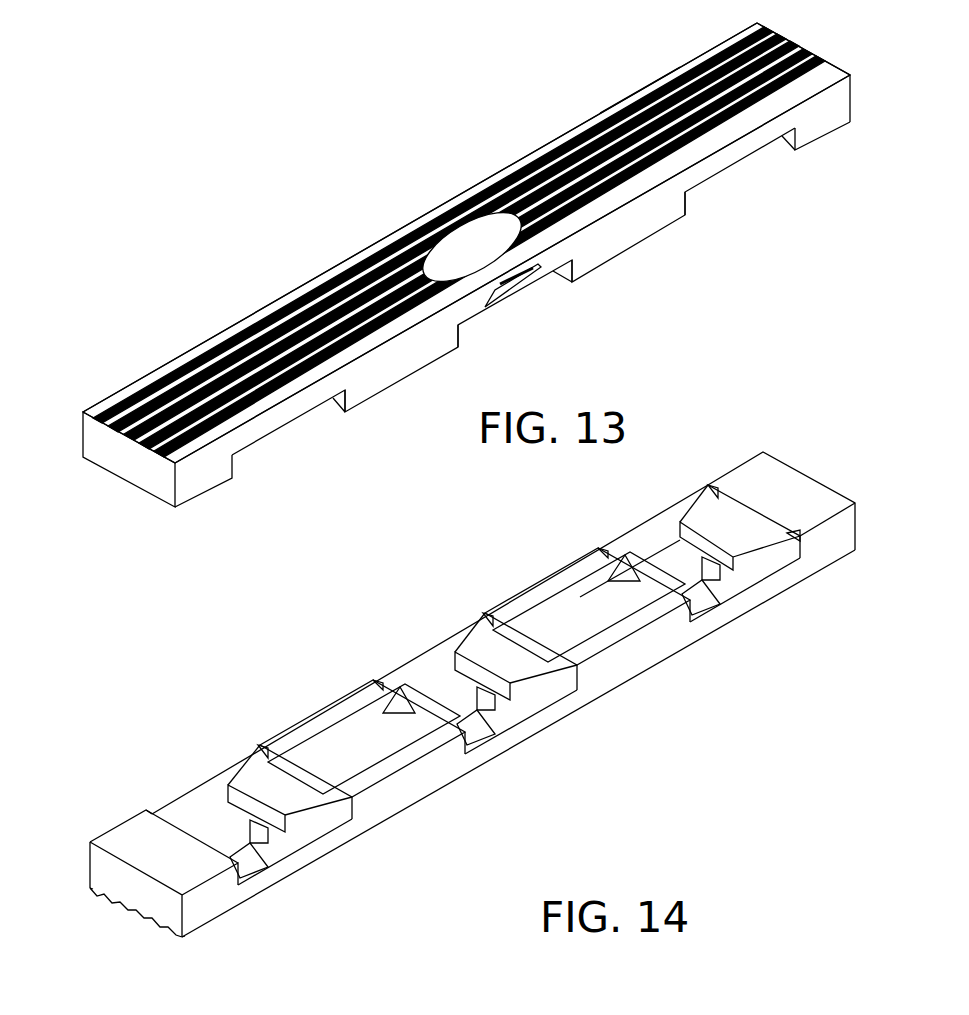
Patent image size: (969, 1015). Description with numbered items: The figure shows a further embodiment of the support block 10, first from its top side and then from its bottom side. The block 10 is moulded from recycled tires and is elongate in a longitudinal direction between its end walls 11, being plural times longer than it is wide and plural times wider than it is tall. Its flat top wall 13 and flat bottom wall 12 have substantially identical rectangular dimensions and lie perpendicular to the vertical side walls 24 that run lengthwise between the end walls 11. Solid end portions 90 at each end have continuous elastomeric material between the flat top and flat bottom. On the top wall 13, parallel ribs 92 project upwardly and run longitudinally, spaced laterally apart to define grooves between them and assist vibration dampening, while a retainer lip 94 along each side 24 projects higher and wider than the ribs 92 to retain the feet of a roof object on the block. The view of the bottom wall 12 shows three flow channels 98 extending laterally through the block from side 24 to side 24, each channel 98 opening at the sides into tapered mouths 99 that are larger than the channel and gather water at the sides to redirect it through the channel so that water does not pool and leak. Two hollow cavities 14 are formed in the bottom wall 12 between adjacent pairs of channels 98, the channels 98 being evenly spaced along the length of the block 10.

In FIG. 13, the support block 10 is at (125, 300).
In FIG. 13, the end walls 11 is at (803, 50).
In FIG. 14, the end walls 11 is at (110, 868).
In FIG. 13, the flat bottom wall 12 is at (388, 393).
In FIG. 13, the flat top wall 13 is at (480, 237).
In FIG. 14, the hollow cavities 14 is at (370, 752).
In FIG. 13, the side walls 24 is at (392, 236).
In FIG. 14, the side walls 24 is at (515, 590).
In FIG. 13, the end portions 90 is at (823, 130).
In FIG. 13, the ribs 92 is at (236, 335).
In FIG. 14, the ribs 92 is at (124, 905).
In FIG. 13, the retainer lip 94 is at (637, 97).
In FIG. 14, the retainer lip 94 is at (90, 888).
In FIG. 14, the flow channels 98 is at (245, 815).
In FIG. 13, the mouths 99 is at (685, 205).
In FIG. 14, the mouths 99 is at (226, 786).